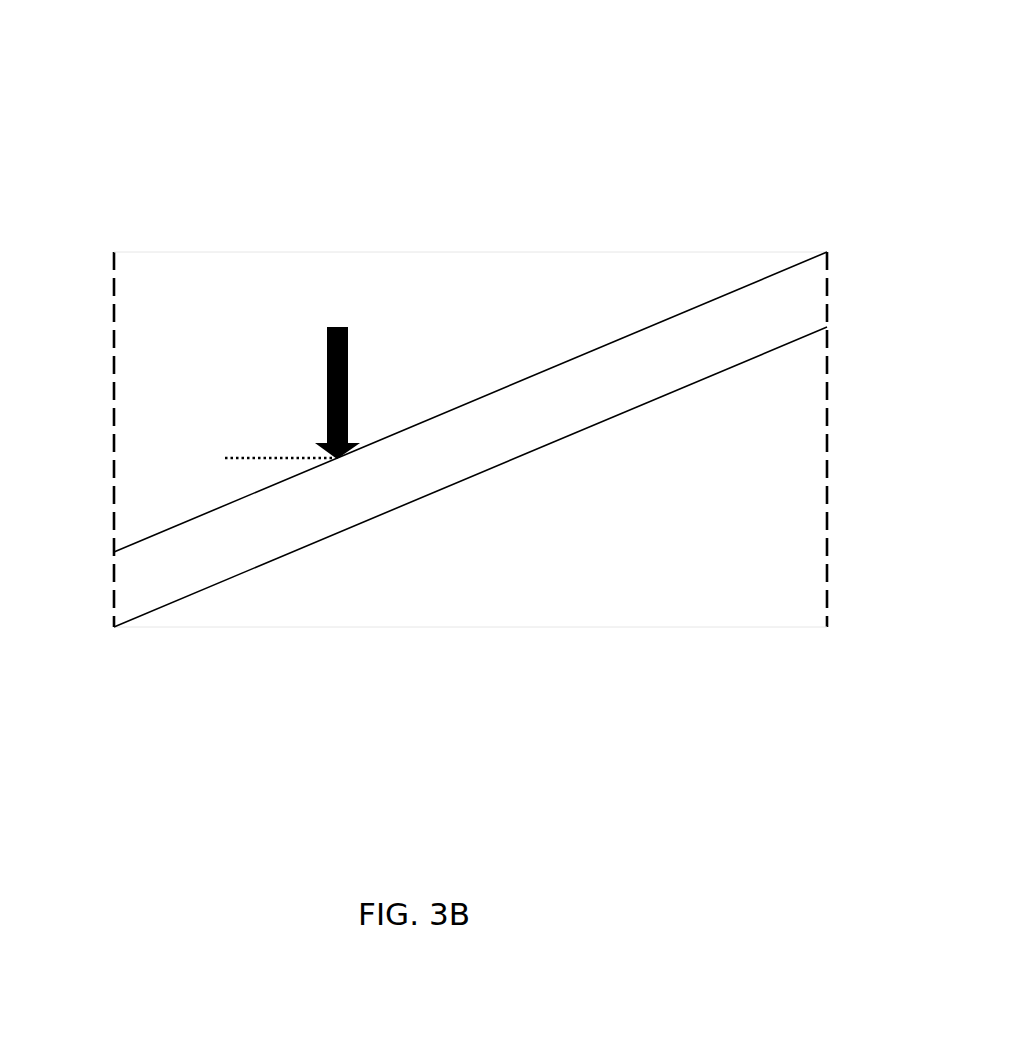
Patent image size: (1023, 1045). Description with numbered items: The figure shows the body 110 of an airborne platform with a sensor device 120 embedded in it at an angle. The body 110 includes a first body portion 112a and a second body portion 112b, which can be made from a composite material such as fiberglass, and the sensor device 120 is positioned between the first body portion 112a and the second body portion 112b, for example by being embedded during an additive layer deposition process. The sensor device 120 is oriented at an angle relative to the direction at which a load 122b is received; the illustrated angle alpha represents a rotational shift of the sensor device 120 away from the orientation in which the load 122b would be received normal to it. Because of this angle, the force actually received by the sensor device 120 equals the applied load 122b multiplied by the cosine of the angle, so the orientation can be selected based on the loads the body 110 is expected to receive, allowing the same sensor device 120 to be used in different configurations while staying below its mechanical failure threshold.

The body 110 is at (413, 138).
The first body portion 112a is at (190, 327).
The second body portion 112b is at (677, 571).
The sensor device 120 is at (788, 307).
The load 122b is at (340, 328).